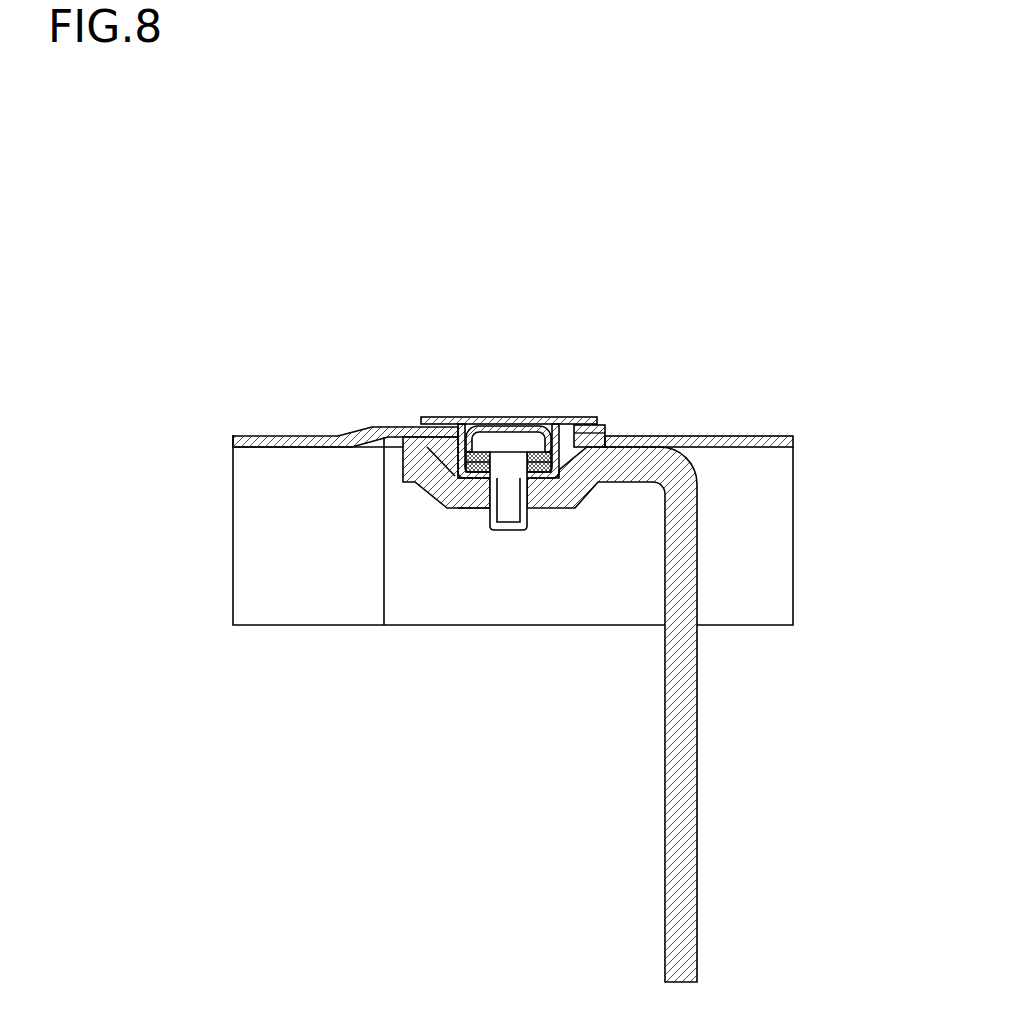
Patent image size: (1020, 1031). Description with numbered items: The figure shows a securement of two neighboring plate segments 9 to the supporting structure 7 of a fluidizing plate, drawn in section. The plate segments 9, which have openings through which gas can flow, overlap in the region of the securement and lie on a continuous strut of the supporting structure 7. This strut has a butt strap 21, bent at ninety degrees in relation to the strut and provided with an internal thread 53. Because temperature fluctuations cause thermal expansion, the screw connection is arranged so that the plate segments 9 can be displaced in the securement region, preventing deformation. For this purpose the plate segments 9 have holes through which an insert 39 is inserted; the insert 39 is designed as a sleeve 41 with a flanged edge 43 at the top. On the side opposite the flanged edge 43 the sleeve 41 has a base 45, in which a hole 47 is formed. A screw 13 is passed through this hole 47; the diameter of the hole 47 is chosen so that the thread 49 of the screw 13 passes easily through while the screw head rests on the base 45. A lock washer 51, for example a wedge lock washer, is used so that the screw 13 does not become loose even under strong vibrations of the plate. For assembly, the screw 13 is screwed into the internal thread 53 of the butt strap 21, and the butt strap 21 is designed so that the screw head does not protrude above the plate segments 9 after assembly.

The supporting structure 7 is at (768, 552).
The plate segments 9 is at (255, 436).
The screw 13 is at (505, 462).
The butt strap 21 is at (563, 495).
The insert 39 is at (477, 428).
The sleeve 41 is at (430, 488).
The flanged edge 43 is at (583, 425).
The base 45 is at (450, 503).
The hole 47 is at (540, 488).
The thread 49 is at (515, 485).
The lock washer 51 is at (463, 417).
The internal thread 53 is at (475, 508).